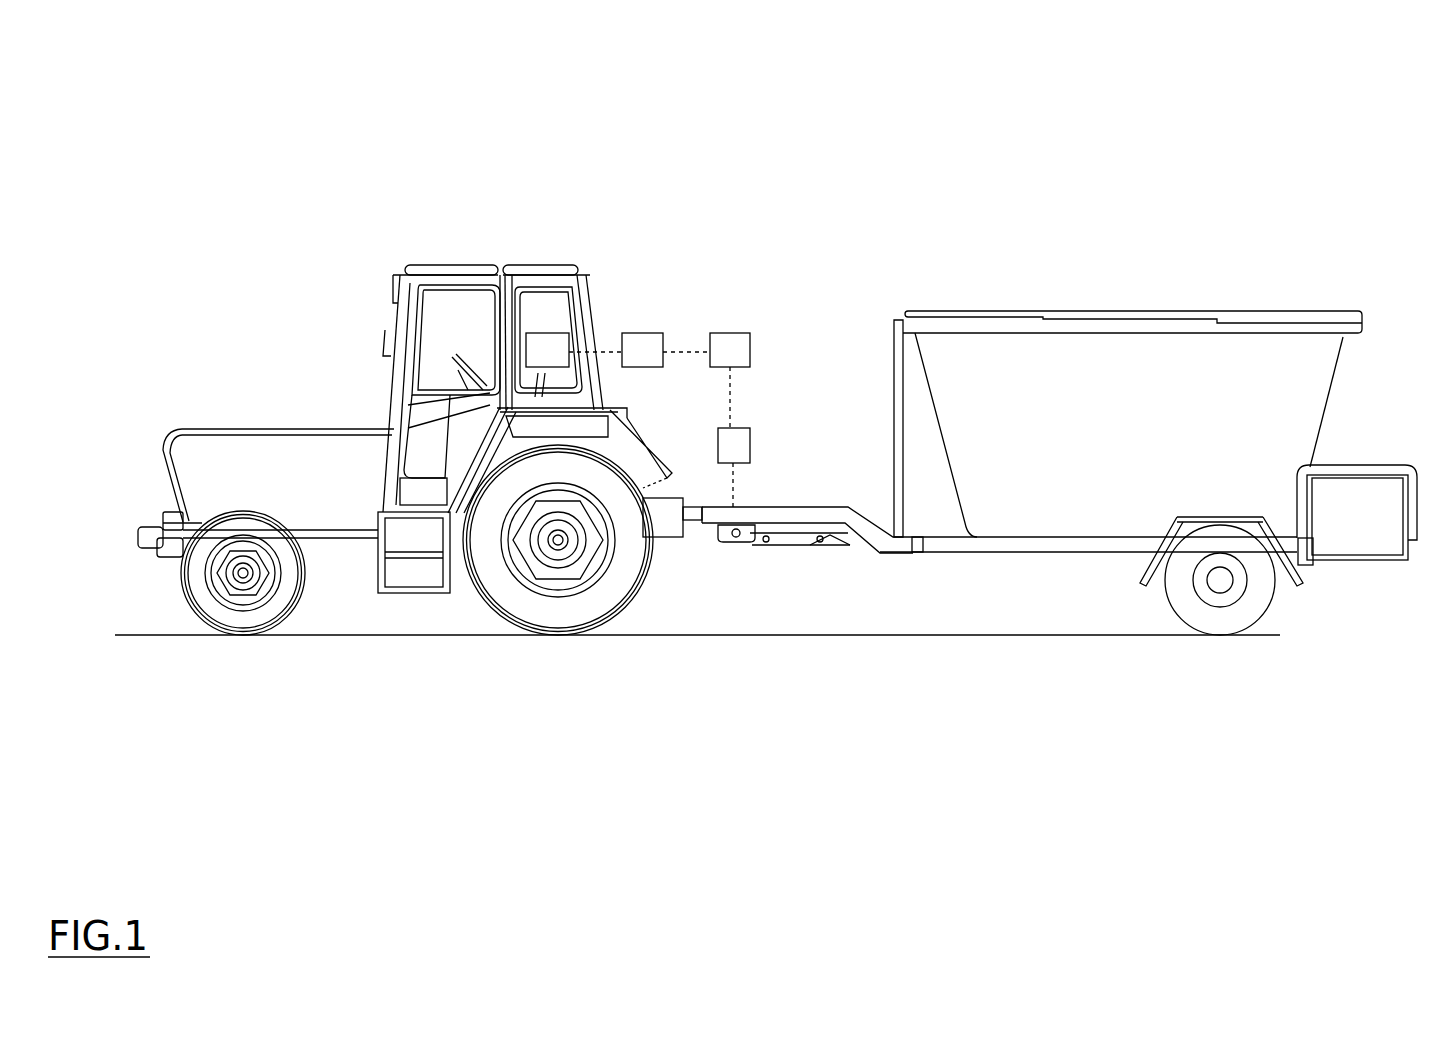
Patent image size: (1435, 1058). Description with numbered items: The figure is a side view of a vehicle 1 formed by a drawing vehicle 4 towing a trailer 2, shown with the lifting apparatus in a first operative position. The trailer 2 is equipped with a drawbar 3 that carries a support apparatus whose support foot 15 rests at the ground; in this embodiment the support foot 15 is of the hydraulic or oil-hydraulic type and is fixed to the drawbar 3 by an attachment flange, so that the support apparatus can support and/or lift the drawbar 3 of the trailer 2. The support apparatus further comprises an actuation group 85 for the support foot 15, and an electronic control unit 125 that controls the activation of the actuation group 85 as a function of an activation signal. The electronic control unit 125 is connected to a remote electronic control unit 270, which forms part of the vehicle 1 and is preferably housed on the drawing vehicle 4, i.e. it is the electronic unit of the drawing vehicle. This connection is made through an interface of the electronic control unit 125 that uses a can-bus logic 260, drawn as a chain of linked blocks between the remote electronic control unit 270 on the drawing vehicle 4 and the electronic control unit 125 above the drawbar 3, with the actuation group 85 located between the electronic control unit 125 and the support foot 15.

The vehicle 1 is at (257, 165).
The trailer 2 is at (843, 308).
The drawbar 3 is at (855, 503).
The drawing vehicle 4 is at (466, 248).
The support foot 15 is at (788, 545).
The actuation group 85 is at (734, 467).
The electronic control unit 125 is at (730, 380).
The can-bus logic 260 is at (666, 350).
The remote electronic control unit 270 is at (574, 350).